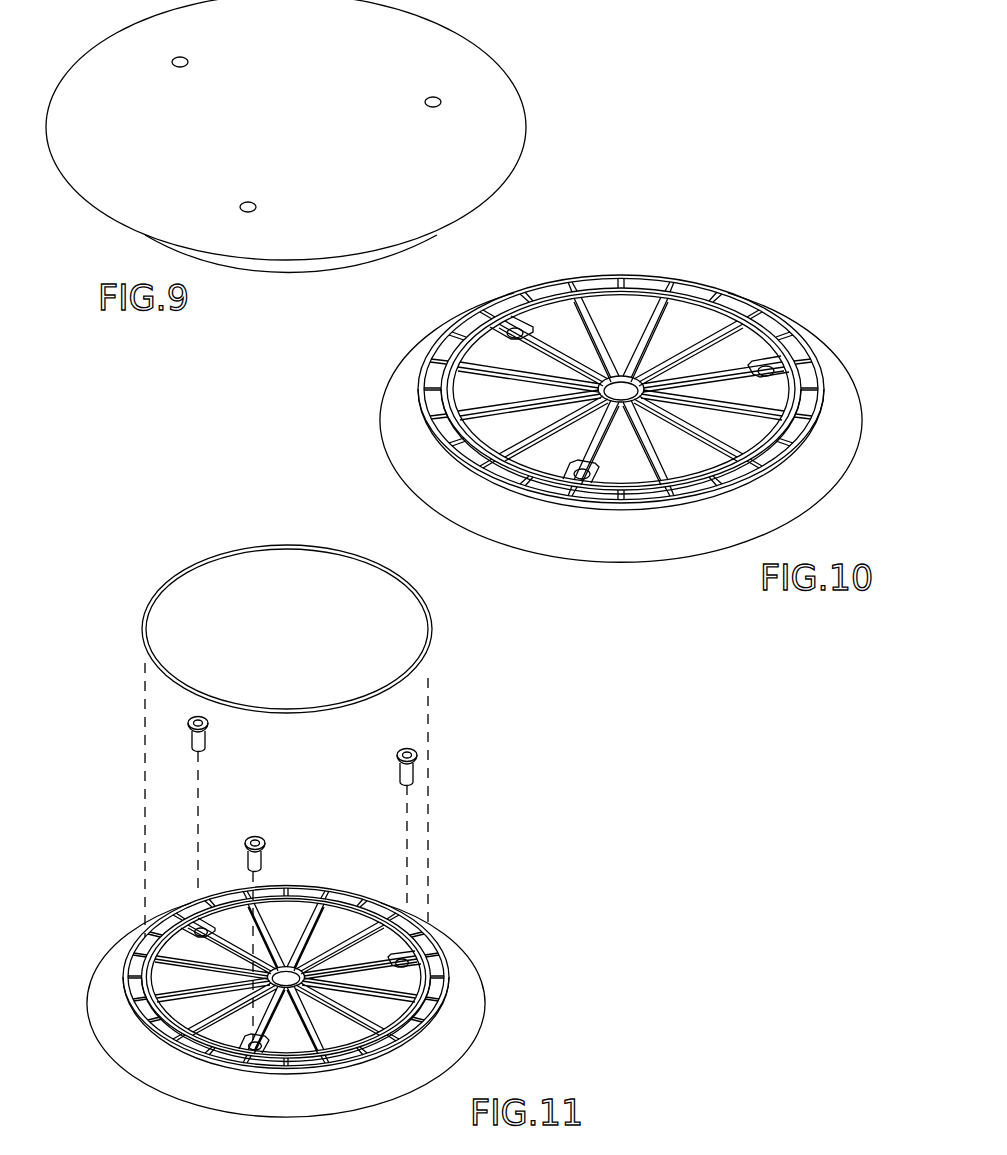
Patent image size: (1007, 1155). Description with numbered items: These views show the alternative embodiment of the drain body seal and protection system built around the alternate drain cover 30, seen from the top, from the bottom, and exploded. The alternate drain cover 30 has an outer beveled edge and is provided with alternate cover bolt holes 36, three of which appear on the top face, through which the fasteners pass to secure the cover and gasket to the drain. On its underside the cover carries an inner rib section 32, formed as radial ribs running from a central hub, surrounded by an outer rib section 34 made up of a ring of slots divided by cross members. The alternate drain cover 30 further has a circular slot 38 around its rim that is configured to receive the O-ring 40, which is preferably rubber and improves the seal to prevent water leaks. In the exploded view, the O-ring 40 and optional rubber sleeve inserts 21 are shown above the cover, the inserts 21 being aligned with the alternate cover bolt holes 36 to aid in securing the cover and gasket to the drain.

In FIG. 11, the rubber sleeve inserts 21 is at (205, 738).
In FIG. 9, the alternate drain cover 30 is at (478, 62).
In FIG. 10, the alternate drain cover 30 is at (402, 392).
In FIG. 11, the alternate drain cover 30 is at (98, 993).
In FIG. 10, the inner rib section 32 is at (667, 323).
In FIG. 11, the inner rib section 32 is at (323, 915).
In FIG. 10, the outer rib section 34 is at (620, 288).
In FIG. 11, the outer rib section 34 is at (287, 886).
In FIG. 9, the alternate cover bolt holes 36 is at (178, 68).
In FIG. 10, the alternate cover bolt holes 36 is at (505, 332).
In FIG. 11, the alternate cover bolt holes 36 is at (192, 926).
In FIG. 11, the circular slot 38 is at (429, 1017).
In FIG. 10, the O-ring 40 is at (793, 437).
In FIG. 11, the O-ring 40 is at (176, 578).